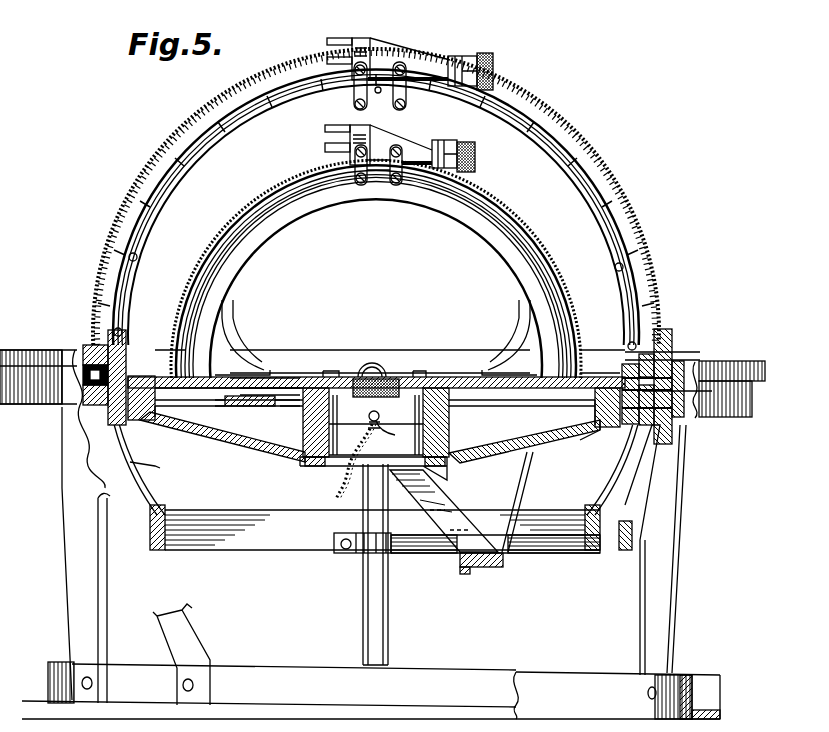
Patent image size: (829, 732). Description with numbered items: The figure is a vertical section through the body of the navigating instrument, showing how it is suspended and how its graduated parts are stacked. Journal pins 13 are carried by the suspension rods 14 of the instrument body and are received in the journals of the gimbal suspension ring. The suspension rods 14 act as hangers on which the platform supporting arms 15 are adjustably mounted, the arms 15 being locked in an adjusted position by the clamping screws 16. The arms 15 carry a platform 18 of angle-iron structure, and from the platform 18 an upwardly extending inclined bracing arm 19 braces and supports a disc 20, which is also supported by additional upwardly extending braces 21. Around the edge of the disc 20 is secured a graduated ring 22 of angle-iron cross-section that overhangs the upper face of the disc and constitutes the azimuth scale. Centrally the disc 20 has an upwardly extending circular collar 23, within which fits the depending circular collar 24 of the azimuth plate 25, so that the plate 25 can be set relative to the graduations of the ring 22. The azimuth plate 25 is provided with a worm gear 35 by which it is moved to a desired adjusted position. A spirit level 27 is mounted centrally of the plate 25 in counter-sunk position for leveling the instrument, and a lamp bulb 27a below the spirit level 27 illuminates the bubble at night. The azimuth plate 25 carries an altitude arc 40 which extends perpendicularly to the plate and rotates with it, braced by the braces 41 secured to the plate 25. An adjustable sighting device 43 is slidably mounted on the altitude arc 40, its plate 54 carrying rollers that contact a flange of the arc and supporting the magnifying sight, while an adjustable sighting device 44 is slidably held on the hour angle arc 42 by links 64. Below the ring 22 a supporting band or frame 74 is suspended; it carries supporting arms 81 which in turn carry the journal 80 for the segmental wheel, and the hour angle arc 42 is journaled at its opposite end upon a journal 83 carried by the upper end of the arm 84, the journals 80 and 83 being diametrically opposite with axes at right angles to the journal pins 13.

The journal pins 13 is at (602, 365).
The suspension rods 14 is at (376, 636).
The platform supporting arms 15 is at (358, 555).
The clamping screws 16 is at (340, 546).
The platform 18 is at (489, 571).
The inclined bracing arm 19 is at (528, 491).
The disc 20 is at (500, 450).
The braces 21 is at (427, 500).
The graduated ring 22 is at (140, 376).
The circular collar 23 is at (449, 430).
The depending circular collar 24 is at (355, 462).
The azimuth plate 25 is at (285, 378).
The spirit level 27 is at (391, 381).
The lamp bulb 27a is at (376, 421).
The worm gear 35 is at (225, 414).
The altitude arc 40 is at (298, 208).
The braces 41 is at (217, 320).
The hour angle arc 42 is at (552, 143).
The adjustable sighting device 43 is at (419, 157).
The adjustable sighting device 44 is at (423, 62).
The plate 54 is at (391, 181).
The links 64 is at (384, 60).
The supporting band or frame 74 is at (544, 555).
The journal 80 is at (670, 359).
The supporting arms 81 is at (622, 461).
The journal 83 is at (93, 354).
The arm 84 is at (130, 462).